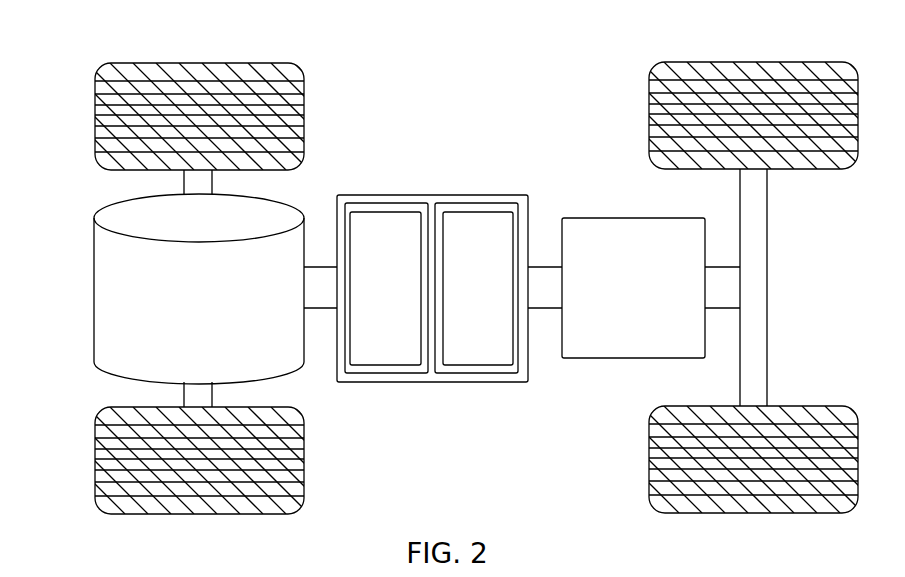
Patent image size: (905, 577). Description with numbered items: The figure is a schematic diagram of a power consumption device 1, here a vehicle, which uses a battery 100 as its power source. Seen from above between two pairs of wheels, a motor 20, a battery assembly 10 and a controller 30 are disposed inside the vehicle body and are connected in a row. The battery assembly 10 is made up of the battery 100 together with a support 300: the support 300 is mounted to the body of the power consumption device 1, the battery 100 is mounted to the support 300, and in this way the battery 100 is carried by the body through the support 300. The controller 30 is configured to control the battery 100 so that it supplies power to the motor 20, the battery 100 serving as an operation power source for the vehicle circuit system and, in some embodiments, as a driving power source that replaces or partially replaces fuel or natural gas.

The power consumption device 1 is at (484, 21).
The battery assembly 10 is at (385, 126).
The battery 100 is at (370, 223).
The support 300 is at (467, 197).
The motor 20 is at (108, 262).
The controller 30 is at (622, 228).